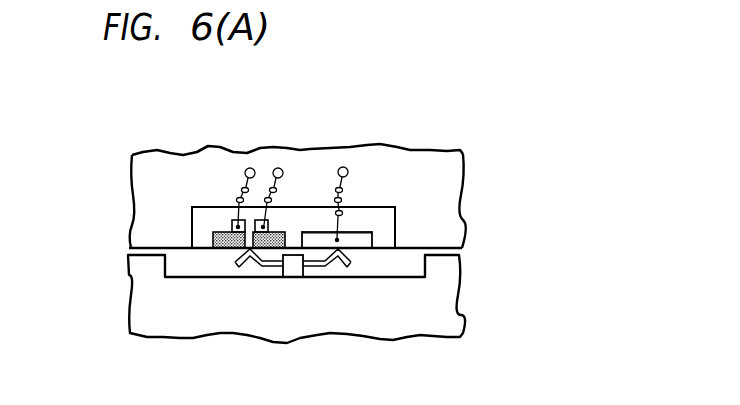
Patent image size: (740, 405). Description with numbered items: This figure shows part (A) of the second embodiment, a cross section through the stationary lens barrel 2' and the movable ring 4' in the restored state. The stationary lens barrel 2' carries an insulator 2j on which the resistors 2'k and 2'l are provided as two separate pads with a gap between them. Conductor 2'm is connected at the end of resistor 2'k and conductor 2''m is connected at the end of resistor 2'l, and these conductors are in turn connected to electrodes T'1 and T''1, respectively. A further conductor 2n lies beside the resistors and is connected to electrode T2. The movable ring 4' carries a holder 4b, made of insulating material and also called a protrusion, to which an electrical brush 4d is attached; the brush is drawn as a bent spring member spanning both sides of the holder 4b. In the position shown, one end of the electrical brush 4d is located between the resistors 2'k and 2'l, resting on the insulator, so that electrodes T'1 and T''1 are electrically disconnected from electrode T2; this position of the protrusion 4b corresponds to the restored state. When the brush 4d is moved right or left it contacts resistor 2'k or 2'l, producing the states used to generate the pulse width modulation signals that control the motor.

The stationary lens barrel 2' is at (318, 196).
The movable ring 4' is at (317, 299).
The insulator 2j is at (395, 220).
The resistor 2'k is at (229, 173).
The conductor 2'm is at (234, 173).
The conductor 2''m is at (292, 171).
The resistor 2'l is at (331, 173).
The conductor 2n is at (362, 232).
The electrode T'1 is at (254, 145).
The electrode T''1 is at (286, 148).
The electrode T2 is at (348, 168).
The electrical brush 4d is at (272, 267).
The holder 4b is at (297, 268).